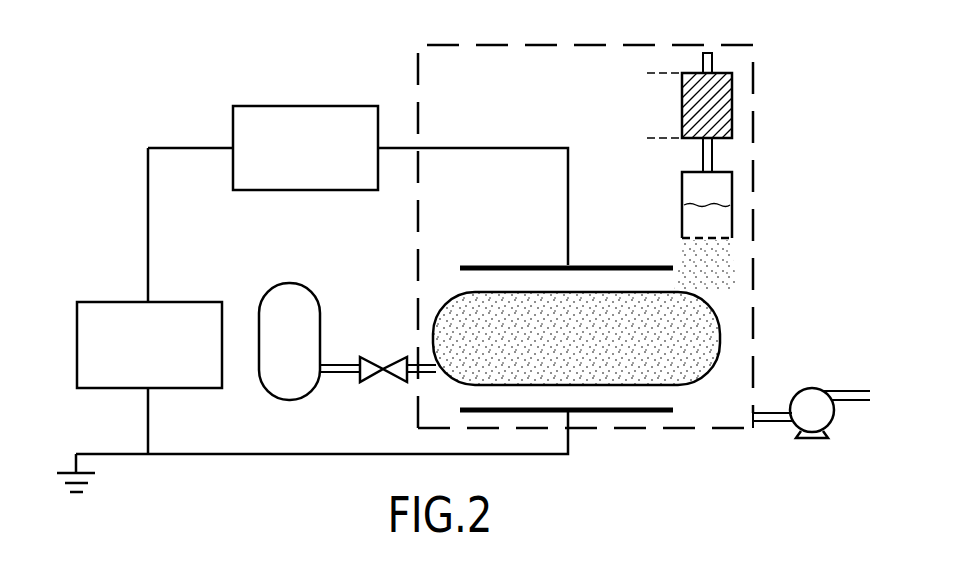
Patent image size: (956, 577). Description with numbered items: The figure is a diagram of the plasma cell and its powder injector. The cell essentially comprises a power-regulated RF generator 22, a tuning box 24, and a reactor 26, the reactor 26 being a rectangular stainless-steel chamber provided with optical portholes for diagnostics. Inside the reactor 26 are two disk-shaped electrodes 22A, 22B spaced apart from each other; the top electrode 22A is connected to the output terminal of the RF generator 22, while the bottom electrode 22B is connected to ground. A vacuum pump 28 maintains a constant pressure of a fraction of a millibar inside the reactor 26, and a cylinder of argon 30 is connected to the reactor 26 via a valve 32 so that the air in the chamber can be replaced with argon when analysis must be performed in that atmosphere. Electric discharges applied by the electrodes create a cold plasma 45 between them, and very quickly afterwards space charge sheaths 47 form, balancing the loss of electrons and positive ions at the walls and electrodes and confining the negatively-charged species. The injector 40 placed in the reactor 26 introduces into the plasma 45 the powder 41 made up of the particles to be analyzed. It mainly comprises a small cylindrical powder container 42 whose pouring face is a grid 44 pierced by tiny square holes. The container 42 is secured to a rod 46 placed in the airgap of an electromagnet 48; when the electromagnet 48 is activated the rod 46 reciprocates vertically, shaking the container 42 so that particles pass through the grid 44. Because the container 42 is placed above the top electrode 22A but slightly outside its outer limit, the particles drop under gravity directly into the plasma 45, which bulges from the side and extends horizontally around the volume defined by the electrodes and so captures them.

The power-regulated RF generator 22 is at (137, 358).
The top electrode 22A is at (505, 263).
The bottom electrode 22B is at (656, 414).
The tuning box 24 is at (293, 161).
The reactor 26 is at (418, 60).
The vacuum pump 28 is at (812, 388).
The cylinder of argon 30 is at (277, 355).
The valve 32 is at (385, 380).
The injector 40 is at (727, 177).
The powder 41 is at (688, 218).
The powder container 42 is at (738, 180).
The grid 44 is at (714, 244).
The cold plasma 45 is at (561, 351).
The rod 46 is at (703, 155).
The space charge sheaths 47 is at (577, 342).
The actuator / motor 48 is at (738, 73).